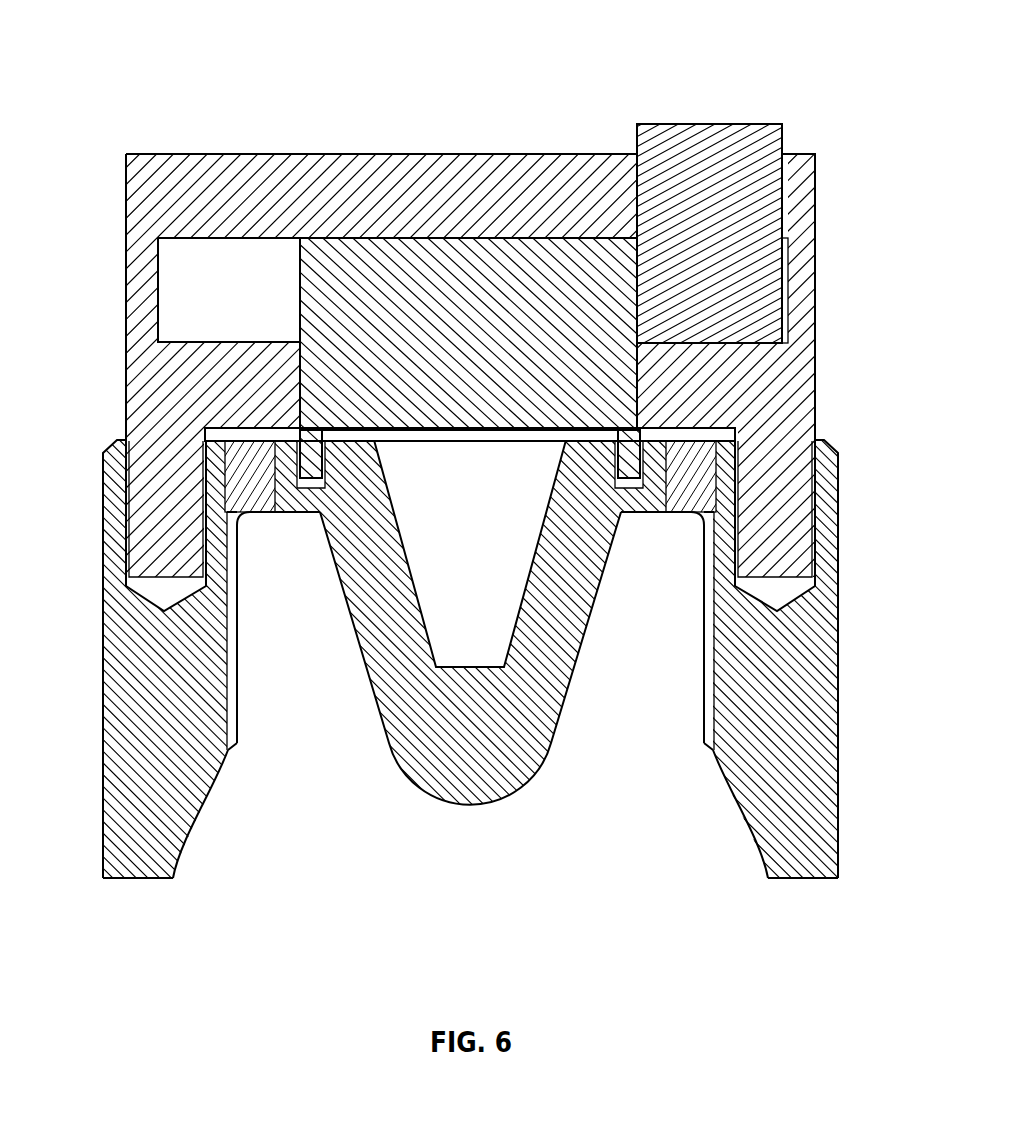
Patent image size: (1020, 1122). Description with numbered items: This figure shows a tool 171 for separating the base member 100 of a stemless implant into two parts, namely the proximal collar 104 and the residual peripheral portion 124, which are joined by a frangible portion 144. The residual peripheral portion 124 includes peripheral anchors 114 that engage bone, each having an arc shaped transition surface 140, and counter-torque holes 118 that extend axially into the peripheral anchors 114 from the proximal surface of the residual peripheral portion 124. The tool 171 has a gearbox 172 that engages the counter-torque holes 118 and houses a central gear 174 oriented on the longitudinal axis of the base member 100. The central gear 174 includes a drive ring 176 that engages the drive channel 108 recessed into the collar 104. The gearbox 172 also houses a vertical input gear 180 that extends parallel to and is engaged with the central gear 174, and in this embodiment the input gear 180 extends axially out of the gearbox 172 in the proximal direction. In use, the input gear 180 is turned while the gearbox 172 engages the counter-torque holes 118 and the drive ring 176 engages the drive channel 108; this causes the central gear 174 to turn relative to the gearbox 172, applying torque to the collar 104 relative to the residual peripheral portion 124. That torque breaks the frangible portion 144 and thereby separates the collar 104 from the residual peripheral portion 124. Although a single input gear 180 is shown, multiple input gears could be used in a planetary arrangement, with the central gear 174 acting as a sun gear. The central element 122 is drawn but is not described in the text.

The base member 100 is at (93, 53).
The proximal collar 104 is at (298, 514).
The drive channel 108 is at (626, 492).
The peripheral anchors 114 is at (103, 598).
The counter-torque holes 118 is at (120, 481).
The central wall 122 is at (512, 802).
The residual peripheral portion 124 is at (838, 548).
The transition surface 140 is at (192, 823).
The frangible portion 144 is at (715, 458).
The tool 171 is at (118, 144).
The gearbox 172 is at (126, 298).
The central gear 174 is at (300, 262).
The drive ring 176 is at (640, 455).
The input gear 180 is at (762, 124).